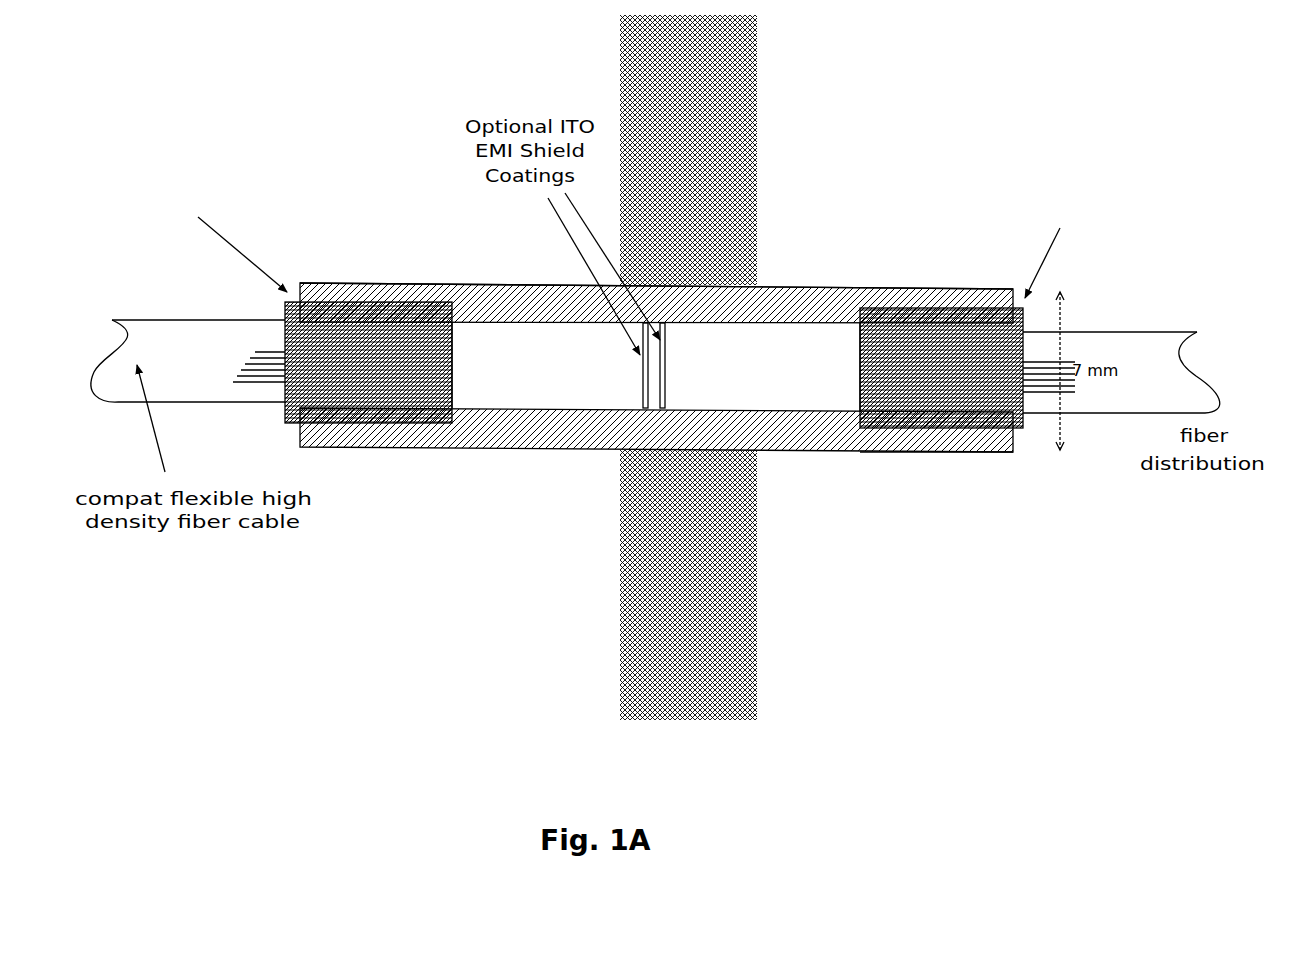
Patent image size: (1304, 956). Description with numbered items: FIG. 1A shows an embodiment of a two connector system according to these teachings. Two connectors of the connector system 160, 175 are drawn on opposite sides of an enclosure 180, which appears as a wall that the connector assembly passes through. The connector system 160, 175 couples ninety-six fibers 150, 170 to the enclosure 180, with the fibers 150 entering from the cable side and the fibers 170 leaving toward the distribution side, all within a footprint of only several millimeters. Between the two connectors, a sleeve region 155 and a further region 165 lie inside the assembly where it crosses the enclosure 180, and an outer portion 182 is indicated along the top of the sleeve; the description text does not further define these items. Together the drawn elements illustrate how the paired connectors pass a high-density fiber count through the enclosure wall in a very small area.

The fibers 150 is at (385, 448).
The alignment cavity of connector sleeve 155 is at (565, 375).
The connector system 160 is at (244, 294).
The alignment cavity, distribution side 165 is at (778, 397).
The fibers 170 is at (943, 447).
The connector system 175 is at (1064, 300).
The enclosure 180 is at (747, 645).
The EMI shield coating on connector sleeve 182 is at (495, 283).